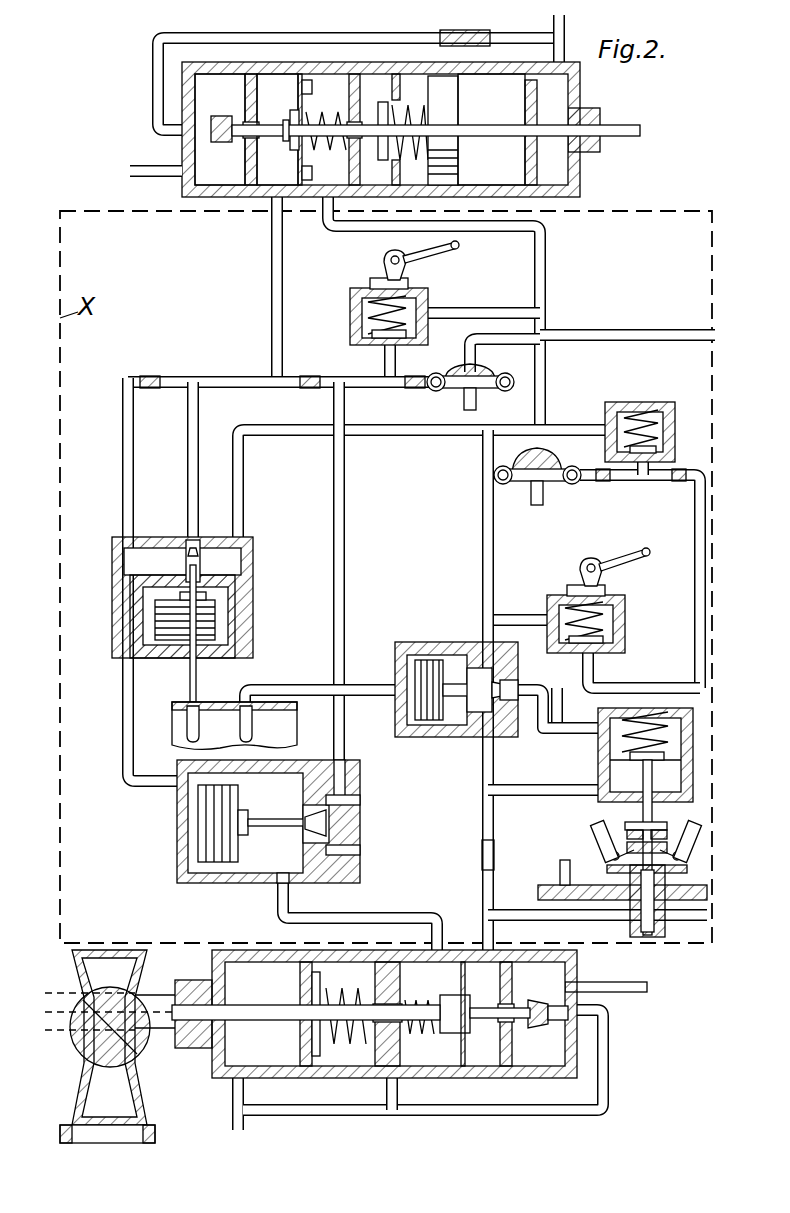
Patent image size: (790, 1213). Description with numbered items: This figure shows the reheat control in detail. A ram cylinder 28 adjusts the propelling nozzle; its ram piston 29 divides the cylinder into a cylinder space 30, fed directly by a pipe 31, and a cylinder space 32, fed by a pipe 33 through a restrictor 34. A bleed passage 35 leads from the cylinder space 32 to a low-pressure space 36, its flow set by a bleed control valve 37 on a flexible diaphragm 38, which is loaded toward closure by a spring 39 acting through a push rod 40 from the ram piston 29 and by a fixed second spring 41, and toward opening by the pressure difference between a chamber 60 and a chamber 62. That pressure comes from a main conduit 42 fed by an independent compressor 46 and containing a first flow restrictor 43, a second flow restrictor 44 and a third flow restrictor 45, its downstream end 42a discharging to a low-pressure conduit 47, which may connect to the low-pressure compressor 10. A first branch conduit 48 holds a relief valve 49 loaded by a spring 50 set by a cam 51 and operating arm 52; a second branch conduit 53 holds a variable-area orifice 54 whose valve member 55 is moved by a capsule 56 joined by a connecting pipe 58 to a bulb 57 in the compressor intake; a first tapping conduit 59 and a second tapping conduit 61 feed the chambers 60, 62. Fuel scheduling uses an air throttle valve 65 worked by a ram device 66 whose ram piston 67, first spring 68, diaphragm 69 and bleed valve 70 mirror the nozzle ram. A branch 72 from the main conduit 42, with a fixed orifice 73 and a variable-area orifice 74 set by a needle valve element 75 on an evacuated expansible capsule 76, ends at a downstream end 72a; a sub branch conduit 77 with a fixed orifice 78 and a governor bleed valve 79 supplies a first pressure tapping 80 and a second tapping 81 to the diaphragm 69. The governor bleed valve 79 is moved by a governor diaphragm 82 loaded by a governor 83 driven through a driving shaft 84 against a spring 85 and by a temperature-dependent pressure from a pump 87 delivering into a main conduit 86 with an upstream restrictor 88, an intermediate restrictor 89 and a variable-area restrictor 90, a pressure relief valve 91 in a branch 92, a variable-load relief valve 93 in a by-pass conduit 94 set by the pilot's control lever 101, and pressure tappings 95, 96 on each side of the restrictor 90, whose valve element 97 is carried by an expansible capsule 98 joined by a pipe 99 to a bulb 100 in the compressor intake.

The low-pressure compressor 10 is at (210, 703).
The ram cylinder 28 is at (245, 72).
The ram piston 29 is at (440, 85).
The cylinder space 30 is at (492, 95).
The pipe 31 is at (565, 28).
The cylinder space 32 is at (370, 90).
The pipe 33 is at (410, 85).
The restrictor 34 is at (462, 38).
The bleed passage 35 is at (153, 68).
The low-pressure space 36 is at (207, 162).
The bleed control valve 37 is at (213, 125).
The flexible diaphragm 38 is at (298, 95).
The spring 39 is at (396, 165).
The push rod 40 is at (340, 120).
The second spring 41 is at (340, 155).
The main conduit 42 is at (222, 376).
The downstream end of main conduit 42a is at (243, 455).
The first flow restrictor 43 is at (410, 388).
The second flow restrictor 44 is at (308, 388).
The third flow restrictor 45 is at (158, 376).
The independent compressor 46 is at (466, 411).
The low-pressure conduit 47 is at (600, 331).
The first branch conduit 48 is at (497, 310).
The relief valve 49 is at (362, 322).
The spring 50 is at (406, 312).
The cam 51 is at (384, 264).
The operating arm 52 is at (459, 250).
The second branch conduit 53 is at (187, 462).
The variable-area orifice 54 is at (187, 542).
The valve member 55 is at (199, 557).
The capsule 56 is at (216, 615).
The bulb 57 is at (190, 730).
The connecting pipe 58 is at (190, 672).
The first tapping conduit 59 is at (271, 280).
The chamber 60 is at (282, 168).
The second tapping conduit 61 is at (546, 236).
The chamber 62 is at (316, 86).
The air throttle valve 65 is at (122, 1048).
The ram device 66 is at (431, 1066).
The ram piston 67 is at (313, 1050).
The first spring 68 is at (346, 1040).
The diaphragm 69 is at (466, 1050).
The bleed valve 70 is at (641, 993).
The branch conduit 72 is at (347, 490).
The downstream end of branch conduit 72a is at (137, 786).
The fixed orifice 73 is at (350, 766).
The variable-area orifice 74 is at (340, 800).
The needle valve element 75 is at (330, 825).
The evacuated expansible capsule 76 is at (198, 840).
The sub branch conduit 77 is at (481, 822).
The fixed orifice 78 is at (345, 850).
The governor bleed valve 79 is at (657, 930).
The first pressure tapping 80 is at (481, 878).
The second tapping 81 is at (276, 912).
The governor diaphragm 82 is at (606, 796).
The governor 83 is at (612, 842).
The driving shaft 84 is at (560, 868).
The spring 85 is at (633, 734).
The main conduit 86 is at (482, 545).
The pump 87 is at (530, 505).
The upstream restrictor 88 is at (603, 482).
The intermediate restrictor 89 is at (676, 481).
The variable-area restrictor 90 is at (505, 686).
The pressure relief valve 91 is at (653, 435).
The branch 92 is at (586, 424).
The variable-load relief valve 93 is at (625, 630).
The by-pass conduit 94 is at (525, 613).
The pressure tapping 95 is at (573, 736).
The pressure tapping 96 is at (547, 792).
The valve element 97 is at (503, 700).
The expansible capsule 98 is at (420, 660).
The pipe 99 is at (370, 685).
The bulb 100 is at (259, 722).
The pilot's control lever 101 is at (646, 557).